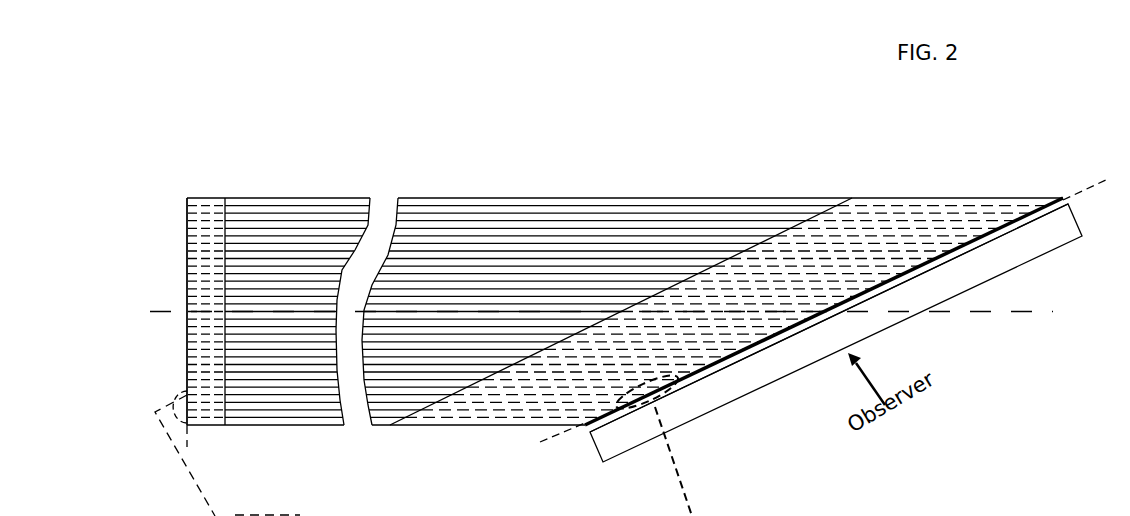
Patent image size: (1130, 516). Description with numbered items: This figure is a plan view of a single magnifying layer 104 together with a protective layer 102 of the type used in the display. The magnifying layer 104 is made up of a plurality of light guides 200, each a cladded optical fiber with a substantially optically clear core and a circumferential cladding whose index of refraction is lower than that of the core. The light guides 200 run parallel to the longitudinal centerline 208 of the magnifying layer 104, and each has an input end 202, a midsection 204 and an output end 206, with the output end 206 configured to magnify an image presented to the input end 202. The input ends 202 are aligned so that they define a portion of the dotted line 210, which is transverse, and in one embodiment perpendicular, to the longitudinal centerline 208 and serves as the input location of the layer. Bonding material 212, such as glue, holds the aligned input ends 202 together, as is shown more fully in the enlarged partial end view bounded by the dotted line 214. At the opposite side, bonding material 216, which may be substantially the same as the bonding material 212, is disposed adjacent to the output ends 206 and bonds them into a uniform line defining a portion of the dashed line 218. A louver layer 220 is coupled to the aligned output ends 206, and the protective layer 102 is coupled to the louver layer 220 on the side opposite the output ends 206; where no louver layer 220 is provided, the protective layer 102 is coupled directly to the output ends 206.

The protective layer 102 is at (710, 398).
The magnifying layer 104 is at (716, 126).
The light guide 200 is at (571, 196).
The input end 202 is at (183, 193).
The midsection 204 is at (535, 190).
The output end 206 is at (1053, 196).
The longitudinal centerline 208 is at (626, 313).
The dotted line 210 is at (187, 198).
The bonding material 212 is at (213, 205).
The dotted line 214 is at (273, 515).
The bonding material 216 is at (833, 217).
The dashed line 218 is at (1096, 177).
The louver layer 220 is at (943, 255).